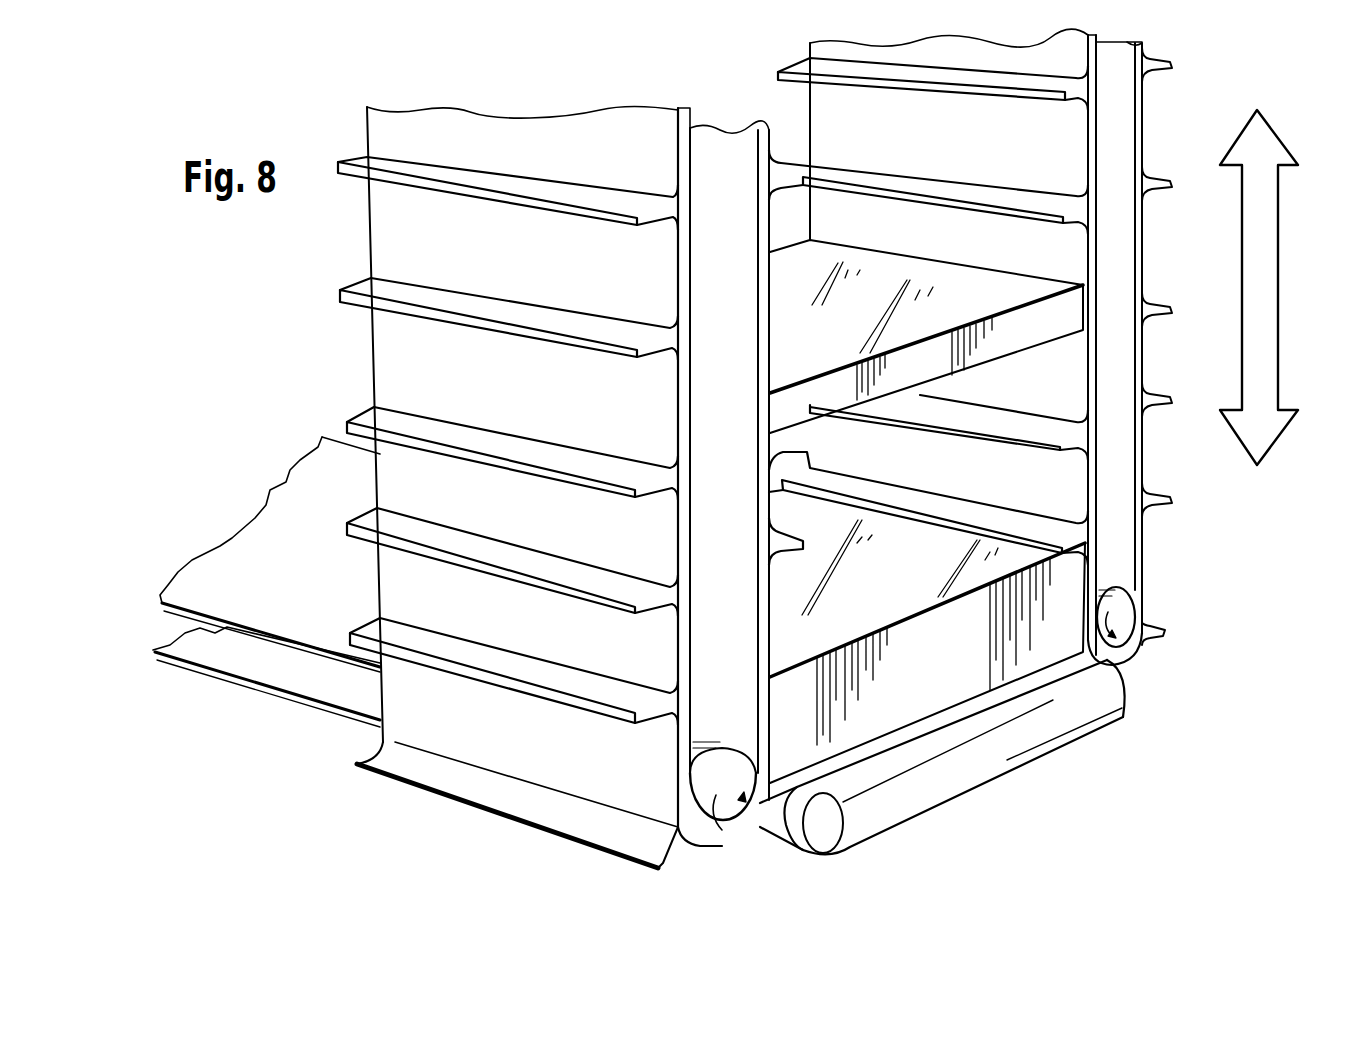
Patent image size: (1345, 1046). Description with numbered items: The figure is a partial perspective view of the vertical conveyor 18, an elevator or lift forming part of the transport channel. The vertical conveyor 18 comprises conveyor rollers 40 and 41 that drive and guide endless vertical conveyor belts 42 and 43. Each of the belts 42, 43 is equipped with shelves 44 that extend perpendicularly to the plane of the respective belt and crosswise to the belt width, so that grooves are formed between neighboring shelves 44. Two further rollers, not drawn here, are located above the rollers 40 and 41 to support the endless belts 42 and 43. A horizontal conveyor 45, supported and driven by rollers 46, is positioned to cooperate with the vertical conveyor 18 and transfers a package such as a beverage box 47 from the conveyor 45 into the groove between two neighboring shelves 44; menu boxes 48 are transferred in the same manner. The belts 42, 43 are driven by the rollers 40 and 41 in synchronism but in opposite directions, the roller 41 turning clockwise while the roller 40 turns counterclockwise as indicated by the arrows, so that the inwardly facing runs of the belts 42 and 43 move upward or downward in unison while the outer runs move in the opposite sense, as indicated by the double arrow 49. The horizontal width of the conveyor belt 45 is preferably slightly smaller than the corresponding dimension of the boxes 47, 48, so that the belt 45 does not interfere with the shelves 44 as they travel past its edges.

The vertical conveyor 18 is at (530, 72).
The conveyor roller 40 is at (727, 830).
The conveyor roller 41 is at (1128, 618).
The endless vertical conveyor belt 42 is at (938, 146).
The endless vertical conveyor belt 43 is at (480, 389).
The shelves 44 is at (372, 520).
The horizontal conveyor 45 is at (250, 542).
The rollers 46 is at (825, 830).
The beverage box 47 is at (899, 592).
The menu box 48 is at (840, 352).
The double arrow 49 is at (1268, 300).